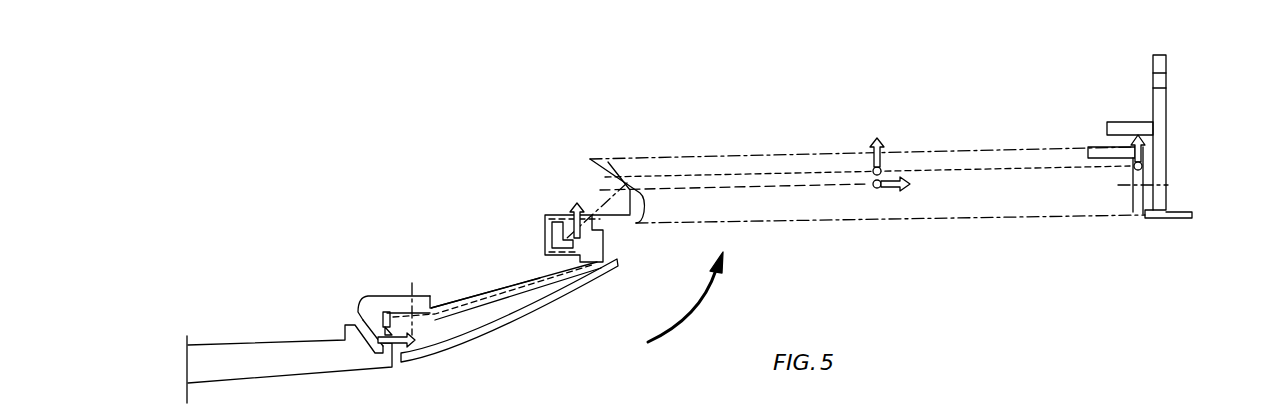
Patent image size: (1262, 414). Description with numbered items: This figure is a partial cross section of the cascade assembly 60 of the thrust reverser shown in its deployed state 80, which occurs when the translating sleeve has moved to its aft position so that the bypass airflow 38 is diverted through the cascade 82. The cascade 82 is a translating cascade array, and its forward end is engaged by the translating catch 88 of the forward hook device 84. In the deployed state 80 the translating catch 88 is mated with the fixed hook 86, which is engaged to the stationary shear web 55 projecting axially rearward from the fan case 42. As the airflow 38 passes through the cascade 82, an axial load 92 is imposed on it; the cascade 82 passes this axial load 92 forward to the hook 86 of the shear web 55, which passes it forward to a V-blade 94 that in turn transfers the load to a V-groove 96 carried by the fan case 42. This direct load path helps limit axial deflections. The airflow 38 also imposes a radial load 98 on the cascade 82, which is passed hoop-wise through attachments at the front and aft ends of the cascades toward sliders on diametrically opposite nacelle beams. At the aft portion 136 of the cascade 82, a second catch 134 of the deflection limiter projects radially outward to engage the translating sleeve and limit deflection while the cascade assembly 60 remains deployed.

The bypass airflow 38 is at (717, 282).
The fan case 42 is at (242, 343).
The shear web 55 is at (477, 292).
The cascade assembly 60 is at (507, 160).
The deployed state 80 is at (461, 157).
The cascade 82 is at (973, 150).
The forward hook device 84 is at (523, 238).
The hook 86 is at (608, 248).
The translating catch 88 is at (545, 234).
The axial load 92 is at (392, 345).
The V-blade 94 is at (360, 318).
The V-groove 96 is at (337, 312).
The radial load 98 is at (572, 205).
The second catch 134 is at (1167, 116).
The aft portion 136 is at (1160, 220).